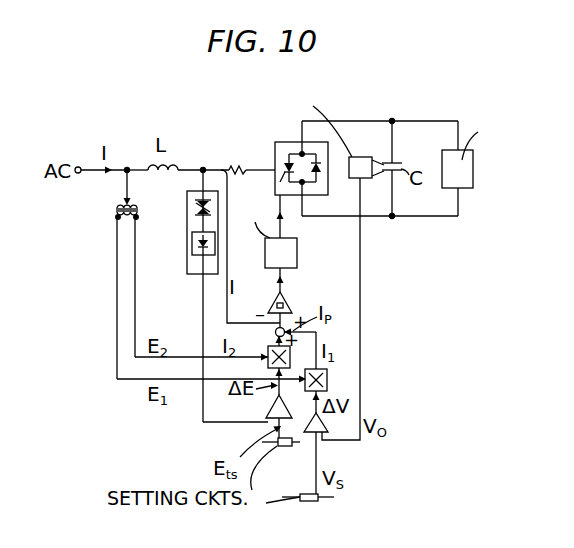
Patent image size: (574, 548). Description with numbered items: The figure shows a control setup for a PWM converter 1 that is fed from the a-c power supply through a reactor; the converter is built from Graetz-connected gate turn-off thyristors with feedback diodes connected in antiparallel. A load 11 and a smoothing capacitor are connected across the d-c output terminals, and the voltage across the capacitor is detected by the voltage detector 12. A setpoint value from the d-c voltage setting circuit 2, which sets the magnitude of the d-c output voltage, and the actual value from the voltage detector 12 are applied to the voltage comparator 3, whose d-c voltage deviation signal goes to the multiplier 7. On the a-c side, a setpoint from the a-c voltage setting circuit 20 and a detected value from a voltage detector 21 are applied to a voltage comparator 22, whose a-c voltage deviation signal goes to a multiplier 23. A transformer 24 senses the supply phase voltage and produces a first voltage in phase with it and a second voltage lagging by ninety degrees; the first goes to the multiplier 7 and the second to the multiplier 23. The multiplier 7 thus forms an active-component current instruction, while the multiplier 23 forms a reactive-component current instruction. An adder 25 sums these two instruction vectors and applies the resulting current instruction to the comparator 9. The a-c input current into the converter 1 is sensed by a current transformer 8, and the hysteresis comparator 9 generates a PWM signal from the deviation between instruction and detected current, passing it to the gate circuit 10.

The PWM converter 1 is at (287, 141).
The d-c voltage setting circuit 2 is at (308, 501).
The voltage comparator 3 is at (330, 423).
The multiplier 7 is at (327, 378).
The current transformer 8 is at (236, 169).
The comparator 9 is at (283, 300).
The gate circuit 10 is at (297, 255).
The load 11 is at (474, 175).
The voltage detector 12 is at (376, 154).
The a-c voltage setting circuit 20 is at (283, 447).
The voltage detector 21 is at (186, 236).
The voltage comparator 22 is at (268, 406).
The multiplier 23 is at (290, 351).
The transformer 24 is at (140, 217).
The adder 25 is at (276, 333).